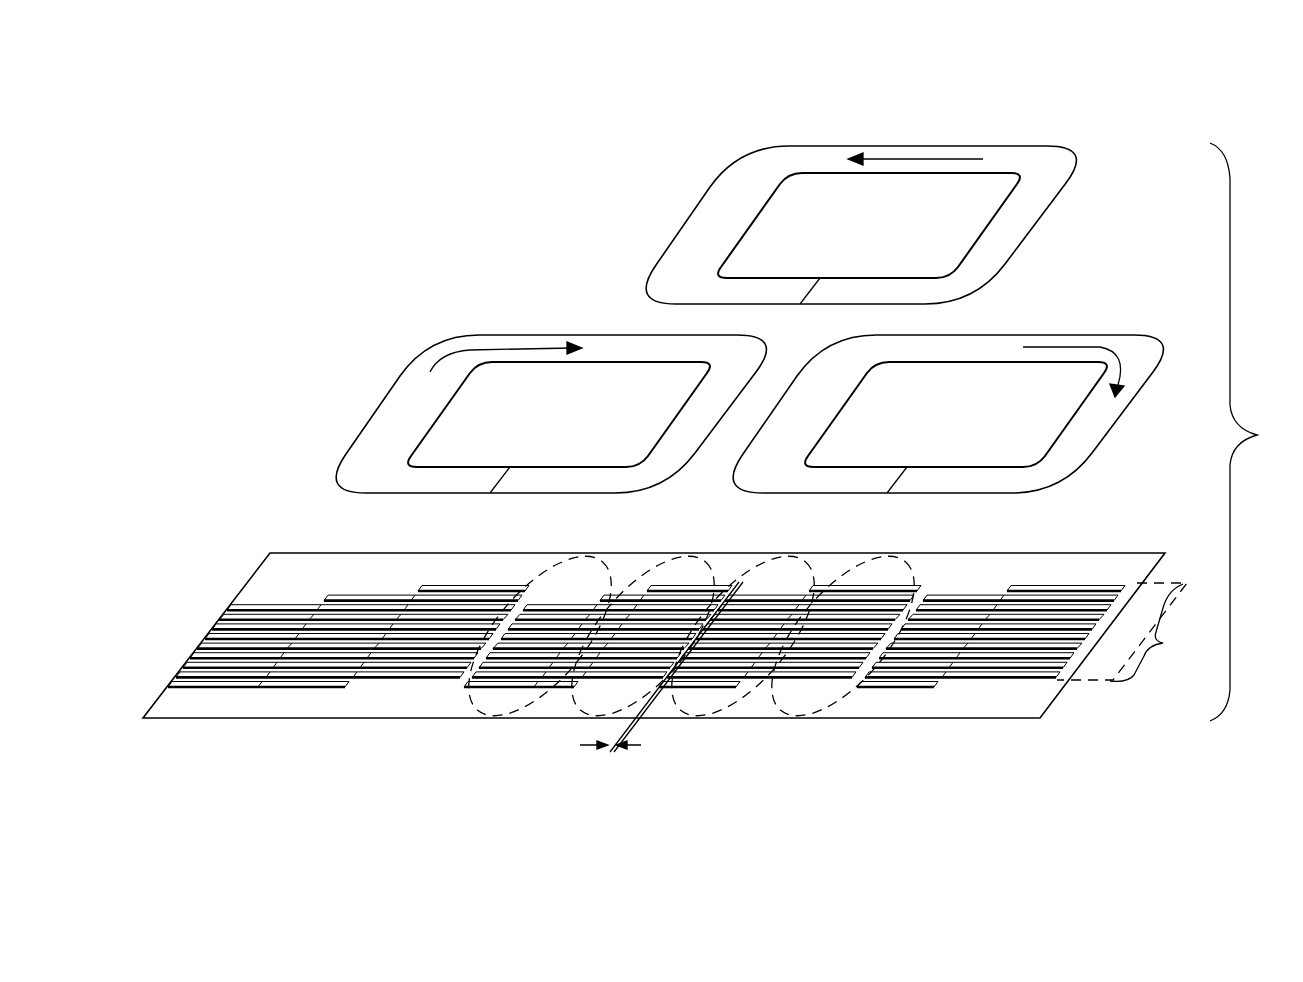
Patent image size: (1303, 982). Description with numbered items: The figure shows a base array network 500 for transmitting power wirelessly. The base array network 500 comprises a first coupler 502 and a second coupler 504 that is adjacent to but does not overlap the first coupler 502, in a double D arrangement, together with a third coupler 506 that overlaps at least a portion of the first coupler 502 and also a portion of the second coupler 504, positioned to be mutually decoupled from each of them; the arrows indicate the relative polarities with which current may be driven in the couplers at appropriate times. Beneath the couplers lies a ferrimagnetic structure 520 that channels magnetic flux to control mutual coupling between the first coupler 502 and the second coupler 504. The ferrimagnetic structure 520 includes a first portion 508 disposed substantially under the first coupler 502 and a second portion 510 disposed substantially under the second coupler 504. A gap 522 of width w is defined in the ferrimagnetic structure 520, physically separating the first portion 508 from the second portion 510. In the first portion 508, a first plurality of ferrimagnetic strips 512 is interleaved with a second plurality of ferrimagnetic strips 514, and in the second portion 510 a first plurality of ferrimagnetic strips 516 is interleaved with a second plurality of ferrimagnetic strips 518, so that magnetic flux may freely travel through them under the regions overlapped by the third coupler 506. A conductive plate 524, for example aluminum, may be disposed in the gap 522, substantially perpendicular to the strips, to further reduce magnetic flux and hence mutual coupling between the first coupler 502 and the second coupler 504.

The base array network 500 is at (343, 85).
The first coupler 502 is at (422, 372).
The second coupler 504 is at (1147, 357).
The third coupler 506 is at (838, 155).
The first portion of the ferrimagnetic structure 508 is at (737, 550).
The second portion of the ferrimagnetic structure 510 is at (940, 550).
The first plurality of ferrimagnetic strips 512 is at (463, 716).
The second plurality of ferrimagnetic strips 514 is at (572, 718).
The first plurality of ferrimagnetic strips 516 is at (702, 712).
The second plurality of ferrimagnetic strips 518 is at (803, 712).
The ferrimagnetic structure 520 is at (1130, 632).
The gap 522 is at (583, 746).
The conductive plate 524 is at (736, 572).